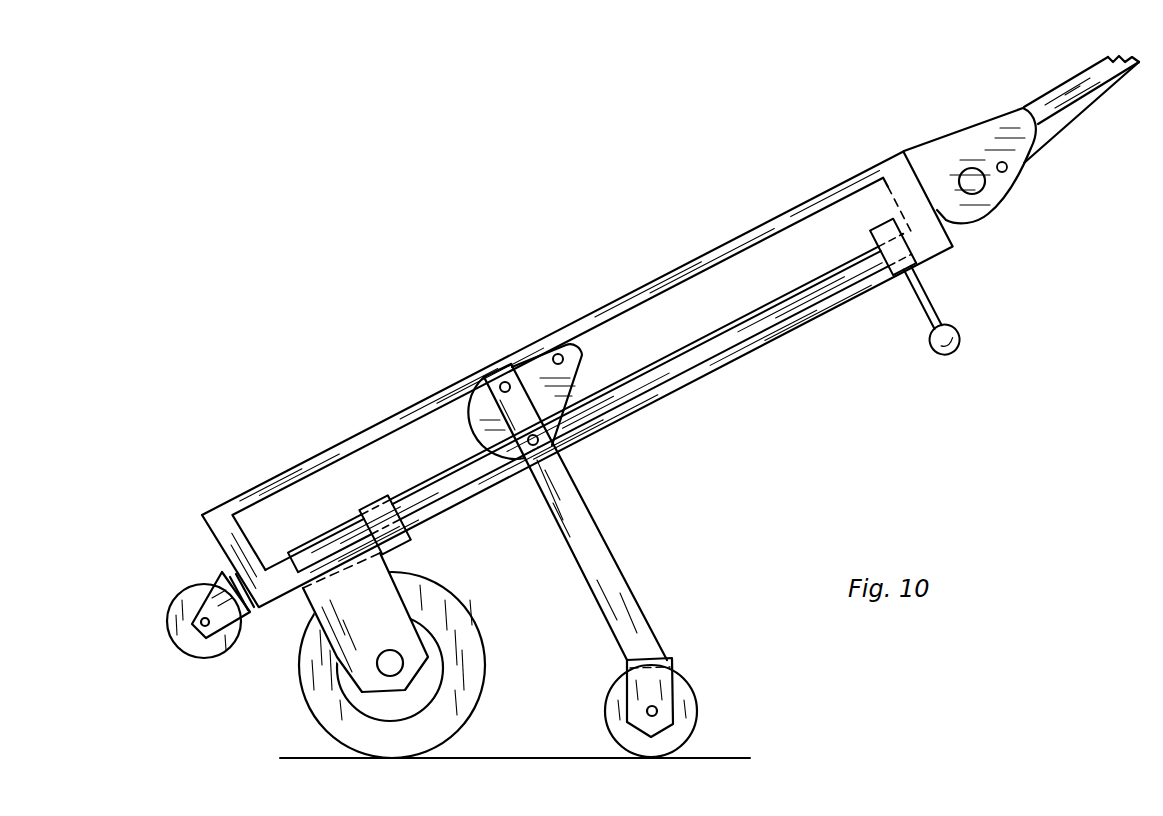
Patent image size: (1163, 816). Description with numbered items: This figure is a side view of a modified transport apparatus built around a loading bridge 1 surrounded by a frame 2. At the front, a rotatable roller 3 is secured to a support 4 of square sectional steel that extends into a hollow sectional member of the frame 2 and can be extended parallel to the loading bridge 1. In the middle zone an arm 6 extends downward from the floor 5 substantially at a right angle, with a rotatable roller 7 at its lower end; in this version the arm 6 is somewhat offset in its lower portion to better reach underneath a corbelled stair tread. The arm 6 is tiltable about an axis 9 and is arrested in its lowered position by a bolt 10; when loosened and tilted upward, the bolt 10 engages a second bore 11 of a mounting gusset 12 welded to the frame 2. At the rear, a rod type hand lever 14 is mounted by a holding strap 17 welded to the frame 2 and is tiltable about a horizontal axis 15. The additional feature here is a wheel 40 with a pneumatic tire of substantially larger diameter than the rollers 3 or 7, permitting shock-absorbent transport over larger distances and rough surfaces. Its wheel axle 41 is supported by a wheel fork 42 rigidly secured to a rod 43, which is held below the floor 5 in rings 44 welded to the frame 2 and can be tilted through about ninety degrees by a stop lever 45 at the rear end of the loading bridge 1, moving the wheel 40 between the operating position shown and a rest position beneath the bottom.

The loading bridge 1 is at (715, 282).
The frame 2 is at (298, 478).
The rotatable roller 3 is at (183, 598).
The support 4 is at (256, 614).
The floor 5 is at (672, 398).
The arm 6 is at (596, 538).
The rotatable roller 7 is at (688, 700).
The axis 9 is at (503, 383).
The bolt 10 is at (540, 441).
The second bore 11 is at (565, 356).
The mounting gusset 12 is at (542, 364).
The hand lever 14 is at (1050, 100).
The horizontal axis 15 is at (975, 188).
The holding strap 17 is at (933, 158).
The wheel with pneumatic tire 40 is at (313, 693).
The wheel axle 41 is at (398, 657).
The wheel fork 42 is at (388, 603).
The rod 43 is at (458, 473).
The ring 44 is at (408, 540).
The stop lever 45 is at (932, 307).